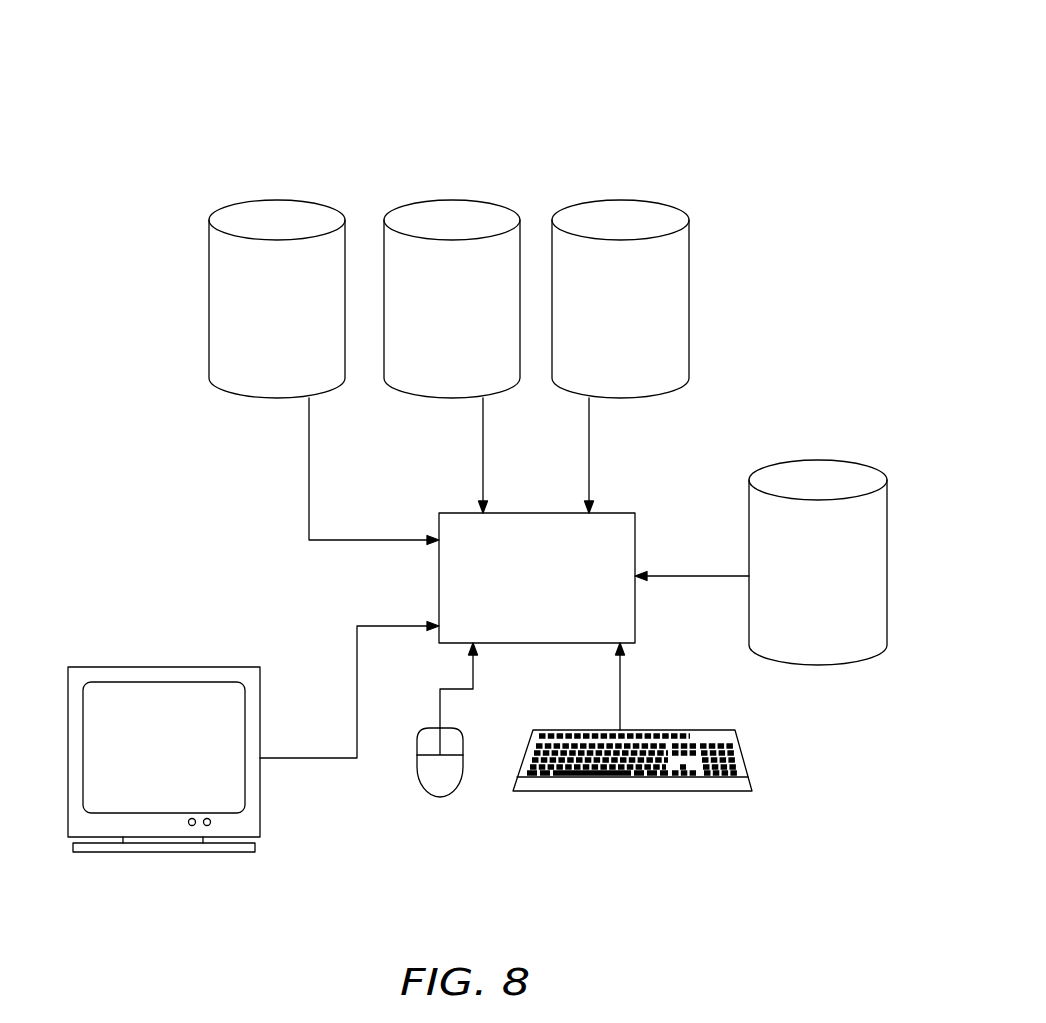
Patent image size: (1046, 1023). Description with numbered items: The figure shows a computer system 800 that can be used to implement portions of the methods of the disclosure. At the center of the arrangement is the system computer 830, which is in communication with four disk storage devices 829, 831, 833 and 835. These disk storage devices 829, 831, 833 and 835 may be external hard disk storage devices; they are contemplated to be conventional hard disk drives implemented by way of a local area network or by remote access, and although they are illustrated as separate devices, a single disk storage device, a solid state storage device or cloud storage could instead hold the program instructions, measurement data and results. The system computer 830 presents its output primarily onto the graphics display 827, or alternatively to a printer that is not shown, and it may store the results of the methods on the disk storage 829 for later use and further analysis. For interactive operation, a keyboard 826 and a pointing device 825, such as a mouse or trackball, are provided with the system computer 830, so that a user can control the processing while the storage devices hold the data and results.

The computer system 800 is at (793, 60).
The pointing device 825 is at (460, 728).
The keyboard 826 is at (745, 756).
The graphics display 827 is at (145, 667).
The disk storage device 829 is at (813, 460).
The system computer 830 is at (617, 511).
The disk storage device 831 is at (625, 200).
The disk storage device 833 is at (457, 200).
The disk storage device 835 is at (283, 200).